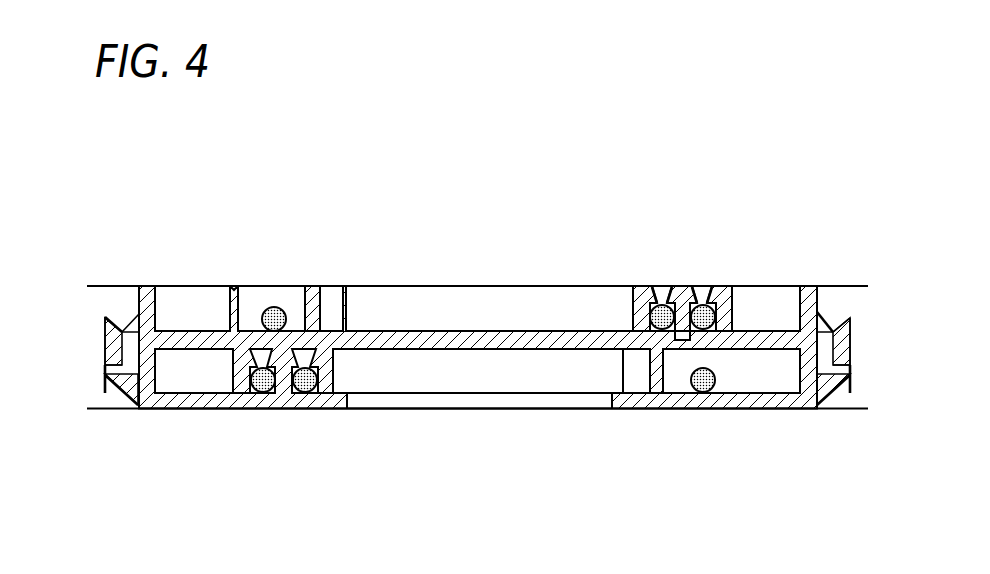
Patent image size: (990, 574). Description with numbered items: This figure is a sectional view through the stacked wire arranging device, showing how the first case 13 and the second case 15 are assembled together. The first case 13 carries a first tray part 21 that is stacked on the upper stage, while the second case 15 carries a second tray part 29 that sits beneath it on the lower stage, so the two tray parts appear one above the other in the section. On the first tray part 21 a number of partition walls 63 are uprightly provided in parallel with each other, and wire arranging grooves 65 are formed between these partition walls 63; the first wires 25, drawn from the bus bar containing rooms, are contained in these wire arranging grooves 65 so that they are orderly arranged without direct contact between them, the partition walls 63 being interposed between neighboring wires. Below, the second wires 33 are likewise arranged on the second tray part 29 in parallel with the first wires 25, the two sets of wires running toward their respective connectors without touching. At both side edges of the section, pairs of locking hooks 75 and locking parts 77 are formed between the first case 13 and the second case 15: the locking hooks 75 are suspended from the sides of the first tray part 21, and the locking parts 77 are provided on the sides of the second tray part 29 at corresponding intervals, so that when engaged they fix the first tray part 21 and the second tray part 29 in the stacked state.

The first case 13 is at (823, 270).
The second case 15 is at (817, 428).
The first tray part 21 is at (415, 324).
The first wires 25 is at (267, 308).
The second tray part 29 is at (433, 385).
The second wires 33 is at (263, 395).
The partition walls 63 is at (310, 293).
The wire arranging grooves 65 is at (659, 298).
The locking hooks 75 is at (113, 394).
The locking parts 77 is at (134, 326).